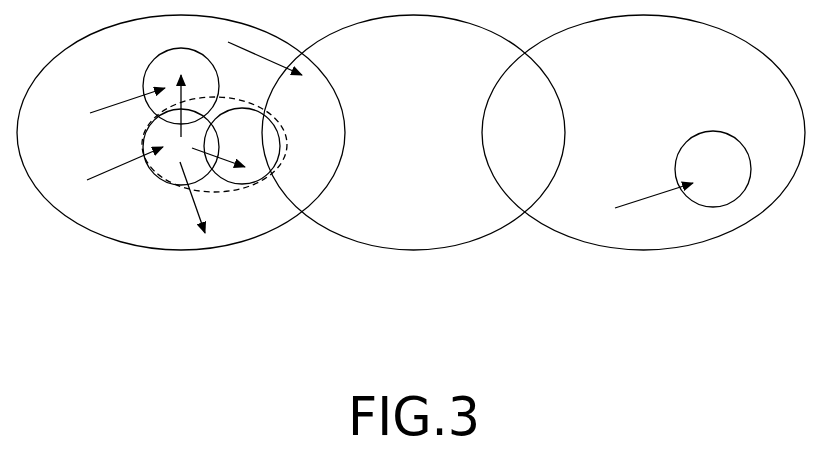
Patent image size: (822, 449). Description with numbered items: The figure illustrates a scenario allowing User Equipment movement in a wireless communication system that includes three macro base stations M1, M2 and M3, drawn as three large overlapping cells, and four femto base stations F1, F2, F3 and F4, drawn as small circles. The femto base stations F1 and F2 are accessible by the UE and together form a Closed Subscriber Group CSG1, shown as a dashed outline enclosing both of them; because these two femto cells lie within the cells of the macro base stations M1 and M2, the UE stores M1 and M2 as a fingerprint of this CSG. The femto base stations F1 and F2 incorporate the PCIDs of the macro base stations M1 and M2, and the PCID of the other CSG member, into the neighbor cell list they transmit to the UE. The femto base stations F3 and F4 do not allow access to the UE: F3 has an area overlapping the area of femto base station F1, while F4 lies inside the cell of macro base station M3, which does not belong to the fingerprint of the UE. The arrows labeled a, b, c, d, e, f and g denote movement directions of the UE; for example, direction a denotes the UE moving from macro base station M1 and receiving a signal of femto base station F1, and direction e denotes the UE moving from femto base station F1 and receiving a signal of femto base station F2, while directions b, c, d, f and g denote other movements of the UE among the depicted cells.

The macro base station M1 is at (181, 132).
The macro base station M2 is at (413, 132).
The macro base station M3 is at (643, 132).
The femto base station F1 is at (181, 147).
The femto base station F2 is at (242, 146).
The femto base station F3 is at (181, 86).
The femto base station F4 is at (713, 169).
The Closed Subscriber Group CSG1 is at (243, 190).
The movement direction a is at (125, 161).
The movement direction b is at (127, 96).
The movement direction c is at (265, 61).
The movement direction d is at (185, 197).
The movement direction e is at (218, 150).
The movement direction f is at (189, 106).
The movement direction g is at (654, 190).